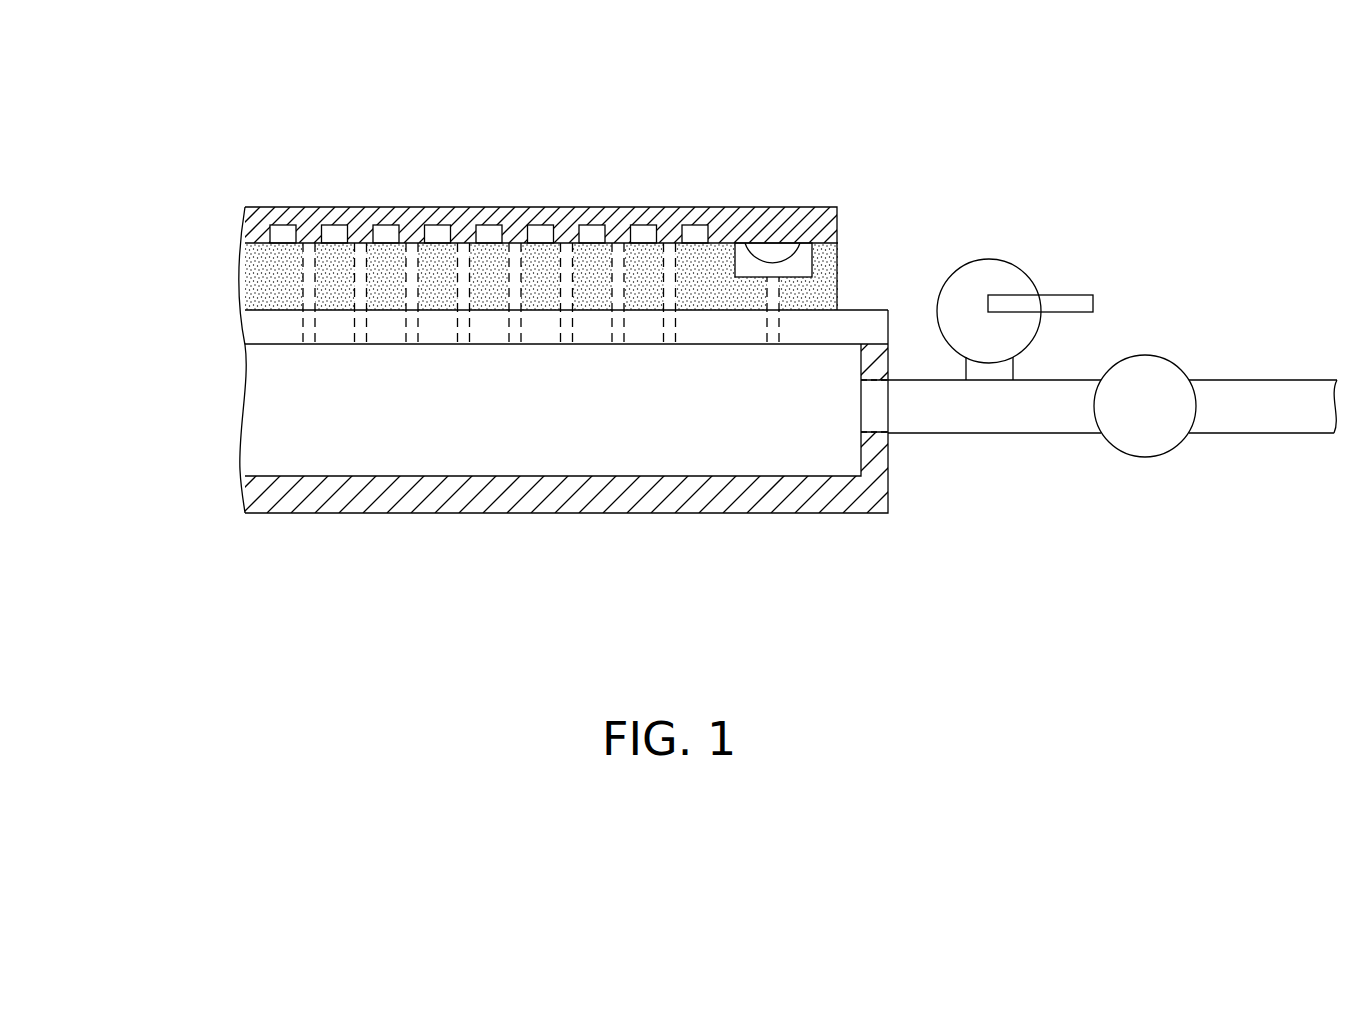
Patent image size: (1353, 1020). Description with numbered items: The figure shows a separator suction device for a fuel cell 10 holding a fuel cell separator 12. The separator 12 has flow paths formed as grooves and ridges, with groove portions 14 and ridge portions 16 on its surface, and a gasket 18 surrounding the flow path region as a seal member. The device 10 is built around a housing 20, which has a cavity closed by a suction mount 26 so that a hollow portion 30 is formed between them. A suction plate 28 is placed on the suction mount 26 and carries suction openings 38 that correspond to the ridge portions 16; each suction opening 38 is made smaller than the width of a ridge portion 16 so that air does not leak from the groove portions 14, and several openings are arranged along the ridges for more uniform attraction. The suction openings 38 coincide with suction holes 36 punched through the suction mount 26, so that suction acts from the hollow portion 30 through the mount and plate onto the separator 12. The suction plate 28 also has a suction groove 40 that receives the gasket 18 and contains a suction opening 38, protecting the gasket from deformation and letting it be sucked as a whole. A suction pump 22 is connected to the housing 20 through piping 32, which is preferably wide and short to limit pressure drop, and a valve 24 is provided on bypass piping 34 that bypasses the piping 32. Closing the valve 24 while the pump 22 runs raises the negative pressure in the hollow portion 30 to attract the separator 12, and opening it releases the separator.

The separator suction device for a fuel cell 10 is at (178, 144).
The fuel cell separator 12 is at (805, 215).
The groove portions 14 is at (284, 231).
The ridge portions 16 is at (318, 215).
The gasket 18 is at (772, 252).
The housing 20 is at (717, 497).
The suction pump 22 is at (1143, 445).
The valve 24 is at (990, 259).
The suction mount 26 is at (250, 328).
The suction plate 28 is at (250, 270).
The hollow portion 30 is at (602, 447).
The piping 32 is at (978, 433).
The bypass piping 34 is at (1013, 370).
The suction holes 36 is at (307, 329).
The suction openings 38 is at (412, 279).
The suction groove 40 is at (814, 257).